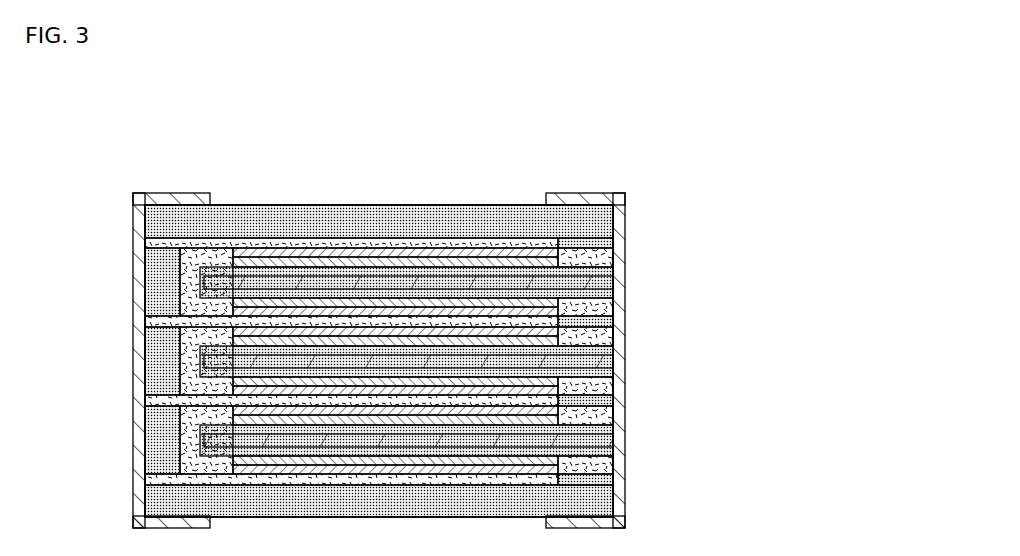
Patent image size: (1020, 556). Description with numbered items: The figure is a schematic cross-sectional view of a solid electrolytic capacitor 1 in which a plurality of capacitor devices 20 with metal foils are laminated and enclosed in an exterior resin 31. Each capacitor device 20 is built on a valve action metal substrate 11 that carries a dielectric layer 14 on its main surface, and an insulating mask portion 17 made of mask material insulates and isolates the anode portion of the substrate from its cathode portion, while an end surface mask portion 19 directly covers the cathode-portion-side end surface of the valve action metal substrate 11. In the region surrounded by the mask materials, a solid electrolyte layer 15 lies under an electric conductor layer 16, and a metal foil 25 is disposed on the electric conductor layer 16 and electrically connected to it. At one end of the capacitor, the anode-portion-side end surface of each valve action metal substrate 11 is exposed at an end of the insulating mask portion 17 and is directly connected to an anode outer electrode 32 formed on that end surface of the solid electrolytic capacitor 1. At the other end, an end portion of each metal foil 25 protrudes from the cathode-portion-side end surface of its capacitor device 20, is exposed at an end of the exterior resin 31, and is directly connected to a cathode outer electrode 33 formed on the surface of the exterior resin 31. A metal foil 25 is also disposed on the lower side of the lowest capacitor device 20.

The solid electrolytic capacitor 1 is at (669, 172).
The valve action metal substrate 11 is at (615, 282).
The dielectric layer 14 is at (397, 255).
The solid electrolyte layer 15 is at (355, 267).
The electric conductor layer 16 is at (285, 252).
The insulating mask portion 17 is at (582, 250).
The end surface mask portion 19 is at (213, 258).
The capacitor device with a metal foil 20 is at (617, 262).
The metal foil 25 is at (160, 243).
The exterior resin 31 is at (515, 225).
The anode outer electrode 32 is at (615, 462).
The cathode outer electrode 33 is at (140, 462).